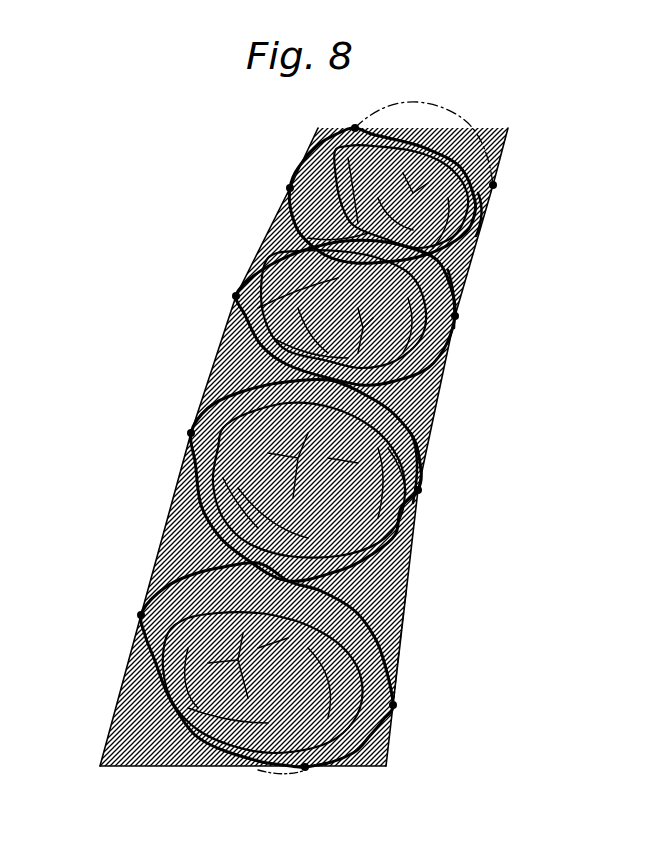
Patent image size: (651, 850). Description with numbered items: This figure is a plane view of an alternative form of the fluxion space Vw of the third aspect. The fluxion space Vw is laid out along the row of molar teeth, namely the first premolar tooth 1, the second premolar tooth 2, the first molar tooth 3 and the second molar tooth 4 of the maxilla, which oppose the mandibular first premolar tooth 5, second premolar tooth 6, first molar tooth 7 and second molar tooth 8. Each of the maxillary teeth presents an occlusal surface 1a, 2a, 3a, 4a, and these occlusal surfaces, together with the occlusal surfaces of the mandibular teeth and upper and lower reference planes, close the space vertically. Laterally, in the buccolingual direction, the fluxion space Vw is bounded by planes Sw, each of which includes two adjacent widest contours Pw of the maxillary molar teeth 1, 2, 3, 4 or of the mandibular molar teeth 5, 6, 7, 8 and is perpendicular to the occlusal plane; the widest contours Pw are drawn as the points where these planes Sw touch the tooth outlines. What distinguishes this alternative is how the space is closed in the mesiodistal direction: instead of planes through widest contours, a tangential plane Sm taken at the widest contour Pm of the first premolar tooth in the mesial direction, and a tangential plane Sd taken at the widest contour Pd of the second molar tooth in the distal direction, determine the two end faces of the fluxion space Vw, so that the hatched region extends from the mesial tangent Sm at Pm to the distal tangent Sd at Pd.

The first premolar tooth 1 is at (290, 152).
The occlusal surface 1a is at (272, 192).
The second premolar tooth 2 is at (233, 277).
The occlusal surface 2a is at (220, 312).
The first molar tooth 3 is at (187, 410).
The occlusal surface 3a is at (178, 443).
The second molar tooth 4 is at (140, 583).
The occlusal surface 4a is at (128, 622).
The first premolar tooth 5 is at (482, 200).
The second premolar tooth 6 is at (455, 285).
The first molar tooth 7 is at (425, 432).
The second molar tooth 8 is at (392, 636).
The widest contour in the mesial direction Pm is at (347, 118).
The widest contour in the distal direction Pd is at (300, 762).
The widest contour Pw is at (281, 178).
The tangential plane Sm is at (428, 112).
The tangential plane Sd is at (145, 760).
The plane Sw is at (258, 222).
The fluxion space Vw is at (408, 452).